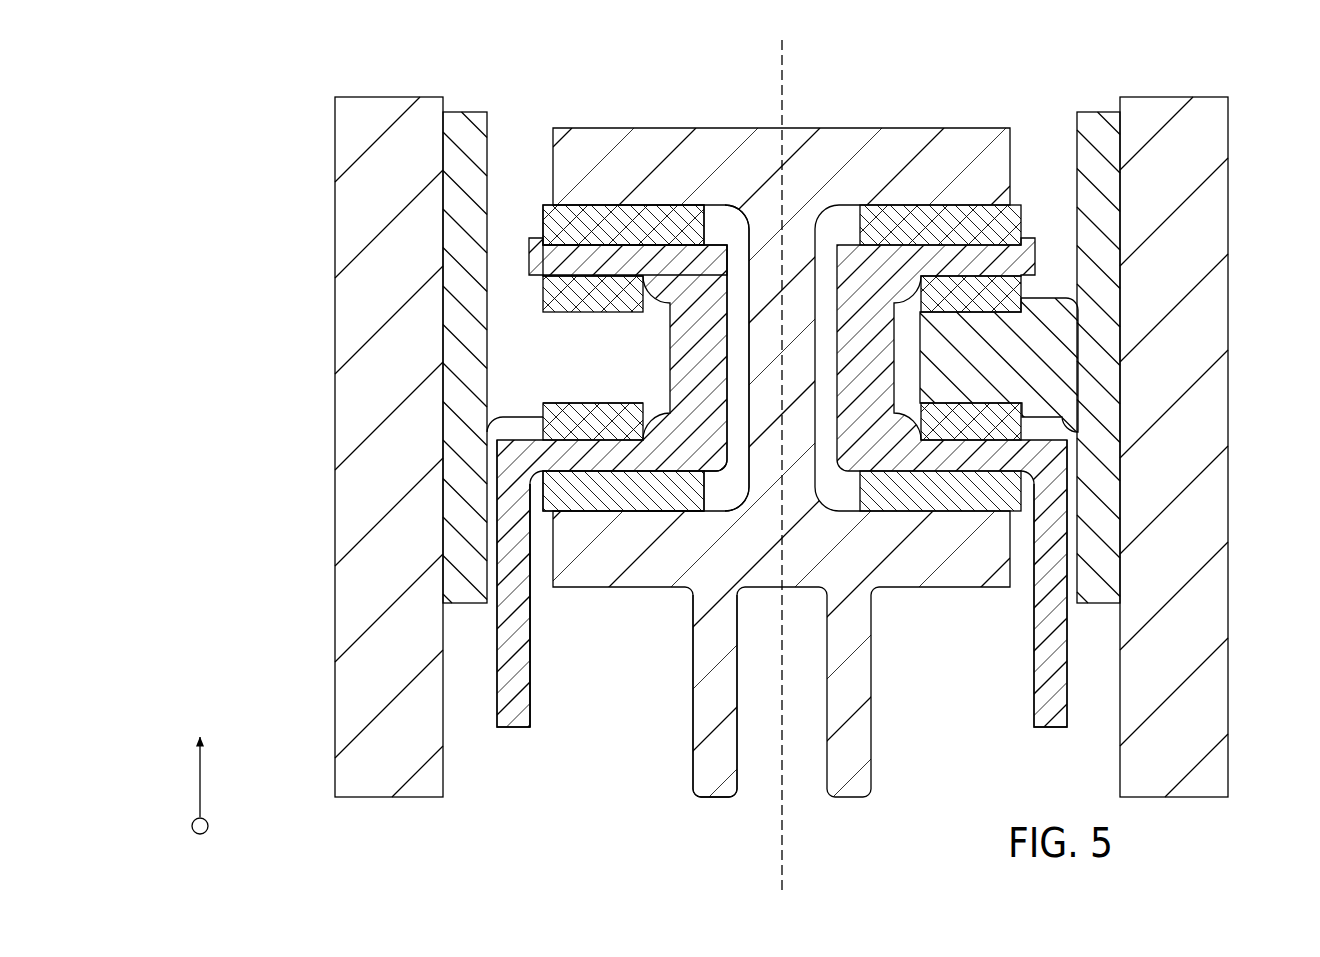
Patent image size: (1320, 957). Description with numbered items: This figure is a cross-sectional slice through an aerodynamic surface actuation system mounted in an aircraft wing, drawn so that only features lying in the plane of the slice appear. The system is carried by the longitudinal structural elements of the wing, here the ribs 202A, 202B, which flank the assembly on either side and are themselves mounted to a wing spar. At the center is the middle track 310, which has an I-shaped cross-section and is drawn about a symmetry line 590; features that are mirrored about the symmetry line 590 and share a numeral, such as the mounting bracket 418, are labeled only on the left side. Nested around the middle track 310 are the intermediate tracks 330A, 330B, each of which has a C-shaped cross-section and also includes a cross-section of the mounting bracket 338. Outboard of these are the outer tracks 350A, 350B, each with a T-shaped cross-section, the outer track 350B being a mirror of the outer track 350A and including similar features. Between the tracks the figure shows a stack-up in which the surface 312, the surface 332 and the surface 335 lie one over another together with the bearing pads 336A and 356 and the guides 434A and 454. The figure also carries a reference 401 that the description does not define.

The rib 202A is at (335, 465).
The rib 202B is at (1228, 490).
The middle track 310 is at (686, 125).
The surface 312 is at (729, 492).
The intermediate track 330A is at (540, 683).
The intermediate track 330B is at (1030, 690).
The surface 332 is at (563, 302).
The surface 335 is at (540, 202).
The bearing pad 336A is at (665, 212).
The mounting bracket 338 is at (532, 645).
The outer track 350A is at (464, 608).
The outer track 350B is at (1100, 609).
The bearing pad 356 is at (560, 402).
The coordinate system 401 is at (182, 809).
The mounting bracket 418 is at (693, 750).
The guide 434A is at (551, 255).
The guide 454 is at (686, 490).
The symmetry line 590 is at (782, 63).